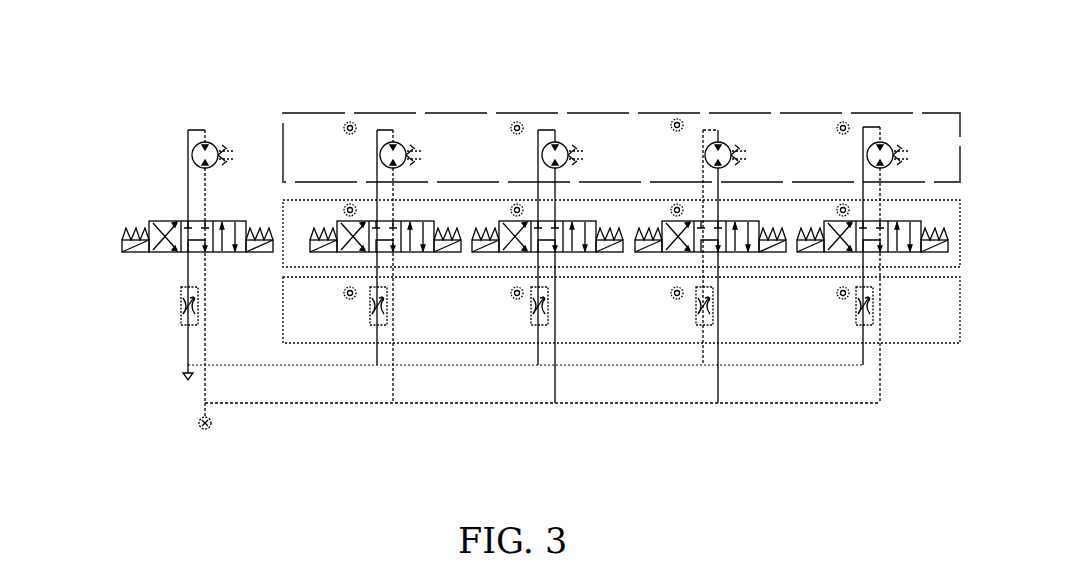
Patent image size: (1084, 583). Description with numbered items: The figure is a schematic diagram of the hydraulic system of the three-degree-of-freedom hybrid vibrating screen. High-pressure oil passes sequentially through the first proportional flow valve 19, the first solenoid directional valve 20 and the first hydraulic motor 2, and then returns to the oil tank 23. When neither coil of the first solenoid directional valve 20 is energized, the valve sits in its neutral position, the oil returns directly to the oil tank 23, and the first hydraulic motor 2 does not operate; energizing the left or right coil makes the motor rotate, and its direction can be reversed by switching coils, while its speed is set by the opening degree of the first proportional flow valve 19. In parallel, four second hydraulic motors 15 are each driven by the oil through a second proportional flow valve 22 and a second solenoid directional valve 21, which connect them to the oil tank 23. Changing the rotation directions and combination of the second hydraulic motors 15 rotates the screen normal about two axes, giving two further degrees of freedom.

The first hydraulic motor 2 is at (205, 150).
The second hydraulic motor 15 is at (455, 132).
The first proportional flow valve 19 is at (184, 308).
The first solenoid directional valve 20 is at (160, 228).
The second solenoid directional valve 21 is at (293, 213).
The second proportional flow valve 22 is at (925, 333).
The oil tank 23 is at (206, 424).